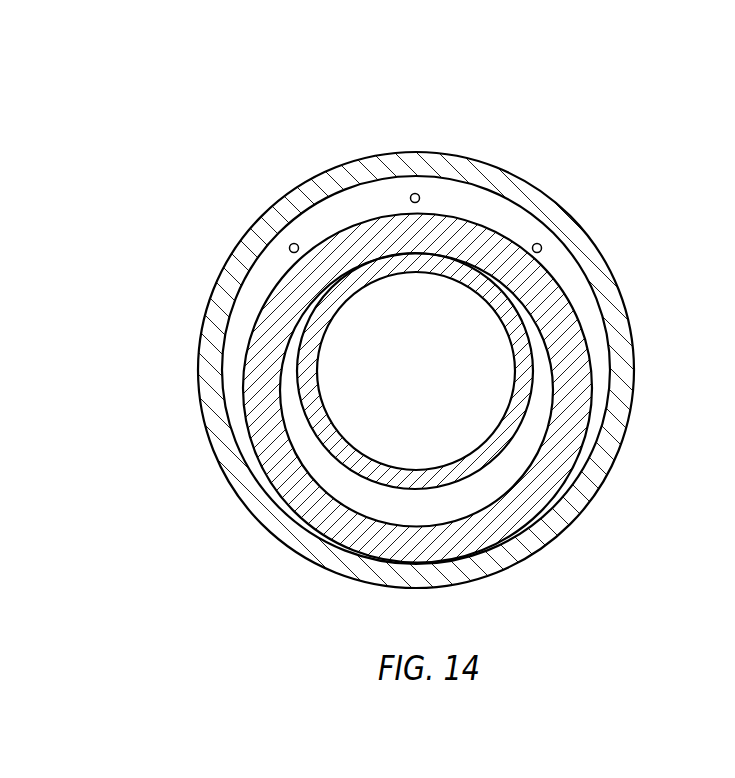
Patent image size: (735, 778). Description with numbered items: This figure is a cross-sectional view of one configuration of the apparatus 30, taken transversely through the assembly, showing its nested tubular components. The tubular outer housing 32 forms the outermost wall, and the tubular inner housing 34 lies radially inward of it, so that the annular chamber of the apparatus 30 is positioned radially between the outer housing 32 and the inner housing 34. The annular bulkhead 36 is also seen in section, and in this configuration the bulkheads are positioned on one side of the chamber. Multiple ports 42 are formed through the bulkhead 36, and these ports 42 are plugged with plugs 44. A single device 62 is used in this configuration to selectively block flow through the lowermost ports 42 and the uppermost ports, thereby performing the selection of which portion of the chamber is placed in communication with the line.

The apparatus 30 is at (652, 98).
The tubular outer housing 32 is at (223, 473).
The tubular inner housing 34 is at (500, 318).
The annular bulkhead 36 is at (224, 403).
The ports 42 is at (420, 198).
The plugs 44 is at (413, 193).
The device 62 is at (567, 302).